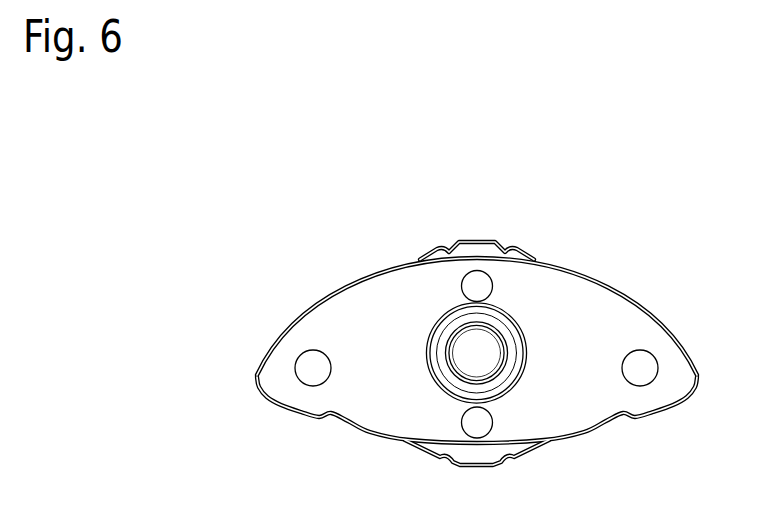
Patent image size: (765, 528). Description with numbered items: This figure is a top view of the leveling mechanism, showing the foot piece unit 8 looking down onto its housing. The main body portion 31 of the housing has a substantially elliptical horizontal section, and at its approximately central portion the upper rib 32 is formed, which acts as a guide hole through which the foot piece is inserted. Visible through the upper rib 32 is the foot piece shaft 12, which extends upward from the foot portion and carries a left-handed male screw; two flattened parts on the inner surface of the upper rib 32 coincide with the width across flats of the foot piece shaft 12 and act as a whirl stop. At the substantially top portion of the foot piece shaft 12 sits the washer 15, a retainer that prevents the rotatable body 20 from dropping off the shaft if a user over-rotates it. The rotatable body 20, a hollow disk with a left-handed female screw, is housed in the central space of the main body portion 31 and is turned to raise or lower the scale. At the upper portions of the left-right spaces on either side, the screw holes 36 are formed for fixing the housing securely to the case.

The foot piece unit 8 is at (466, 344).
The foot piece shaft 12 is at (483, 346).
The washer 15 is at (515, 353).
The rotatable body 20 is at (478, 238).
The main body portion 31 is at (477, 344).
The upper rib 32 is at (523, 359).
The screw holes 36 is at (305, 374).